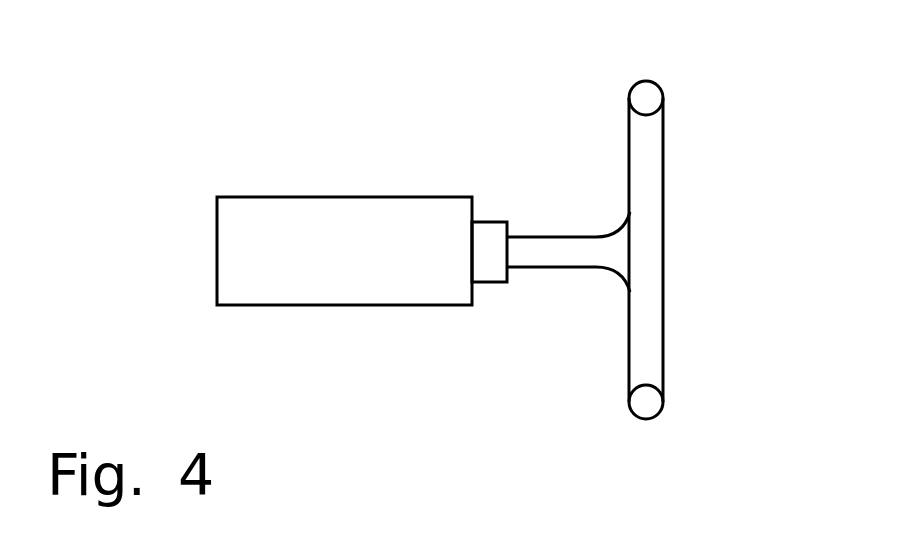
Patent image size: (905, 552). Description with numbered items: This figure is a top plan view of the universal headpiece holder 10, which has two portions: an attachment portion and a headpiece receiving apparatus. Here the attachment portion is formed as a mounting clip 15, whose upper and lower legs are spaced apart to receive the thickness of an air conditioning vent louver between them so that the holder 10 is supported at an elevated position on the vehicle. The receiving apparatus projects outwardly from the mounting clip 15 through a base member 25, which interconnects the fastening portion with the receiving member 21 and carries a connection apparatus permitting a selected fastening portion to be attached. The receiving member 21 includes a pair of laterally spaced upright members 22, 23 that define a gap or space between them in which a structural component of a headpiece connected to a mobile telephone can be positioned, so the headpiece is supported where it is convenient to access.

The holder 10 is at (203, 97).
The mounting clip 15 is at (350, 222).
The base member 25 is at (555, 253).
The receiving member 21 is at (658, 273).
The upright member 23 is at (647, 93).
The upright member 22 is at (647, 405).